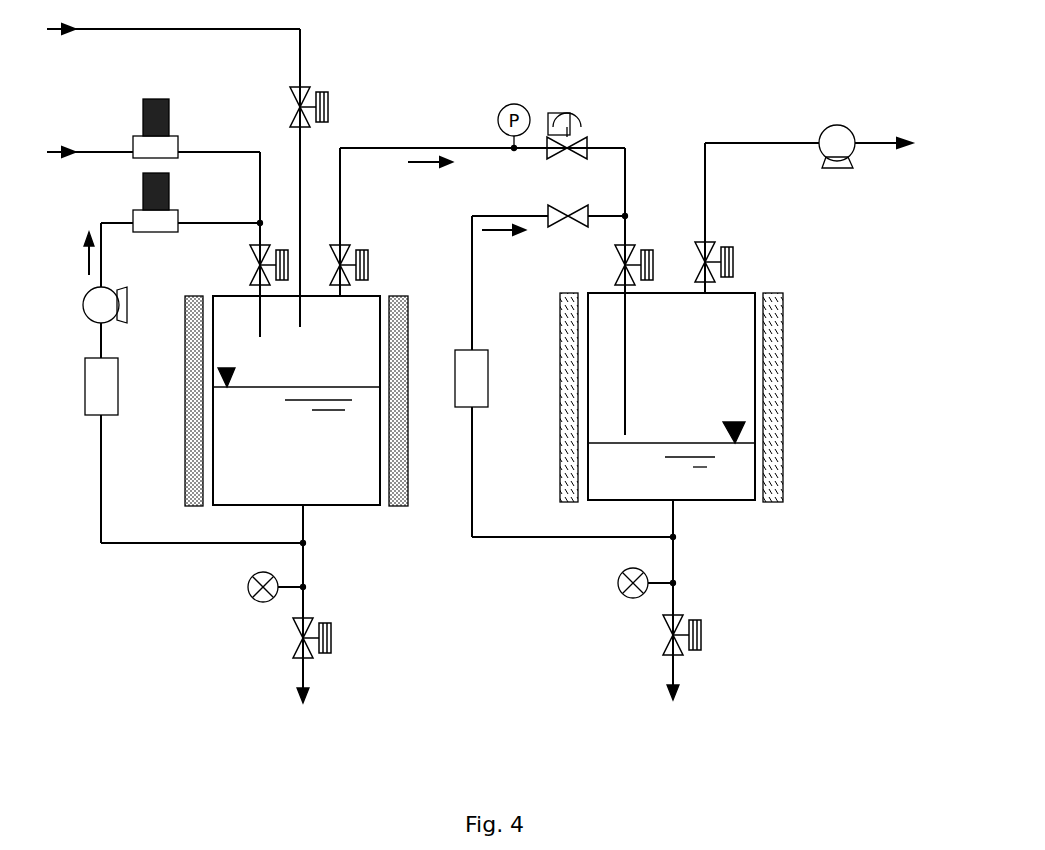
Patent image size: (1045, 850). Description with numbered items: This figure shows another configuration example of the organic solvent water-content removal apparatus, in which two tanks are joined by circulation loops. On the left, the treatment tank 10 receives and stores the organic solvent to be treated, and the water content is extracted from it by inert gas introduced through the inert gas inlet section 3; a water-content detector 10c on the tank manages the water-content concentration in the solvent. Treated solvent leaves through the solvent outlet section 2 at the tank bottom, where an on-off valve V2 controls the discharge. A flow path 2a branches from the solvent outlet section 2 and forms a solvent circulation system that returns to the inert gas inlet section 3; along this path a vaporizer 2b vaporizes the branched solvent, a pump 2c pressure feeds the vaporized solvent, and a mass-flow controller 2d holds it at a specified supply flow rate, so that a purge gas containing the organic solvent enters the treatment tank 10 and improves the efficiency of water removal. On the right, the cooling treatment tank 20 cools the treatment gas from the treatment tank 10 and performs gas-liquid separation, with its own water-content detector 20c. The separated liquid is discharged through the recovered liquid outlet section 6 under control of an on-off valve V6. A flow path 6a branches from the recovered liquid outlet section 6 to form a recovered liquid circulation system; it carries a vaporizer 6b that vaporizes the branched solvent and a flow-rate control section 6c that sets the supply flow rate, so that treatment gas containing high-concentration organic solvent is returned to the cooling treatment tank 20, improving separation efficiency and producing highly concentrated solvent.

The solvent outlet section 2 is at (303, 527).
The flow path 2a is at (152, 545).
The vaporizer 2b is at (83, 395).
The pump 2c is at (85, 313).
The mass-flow controller 2d is at (157, 232).
The inert gas inlet section 3 is at (210, 150).
The recovered liquid outlet section 6 is at (673, 525).
The flow path 6a is at (527, 540).
The vaporizer 6b is at (488, 407).
The flow-rate control section 6c is at (548, 230).
The treatment tank 10 is at (347, 507).
The water-content detector 10c is at (250, 602).
The cooling treatment tank 20 is at (722, 500).
The water-content detector 20c is at (622, 598).
The on-off valve V2 is at (332, 640).
The on-off valve V6 is at (703, 638).